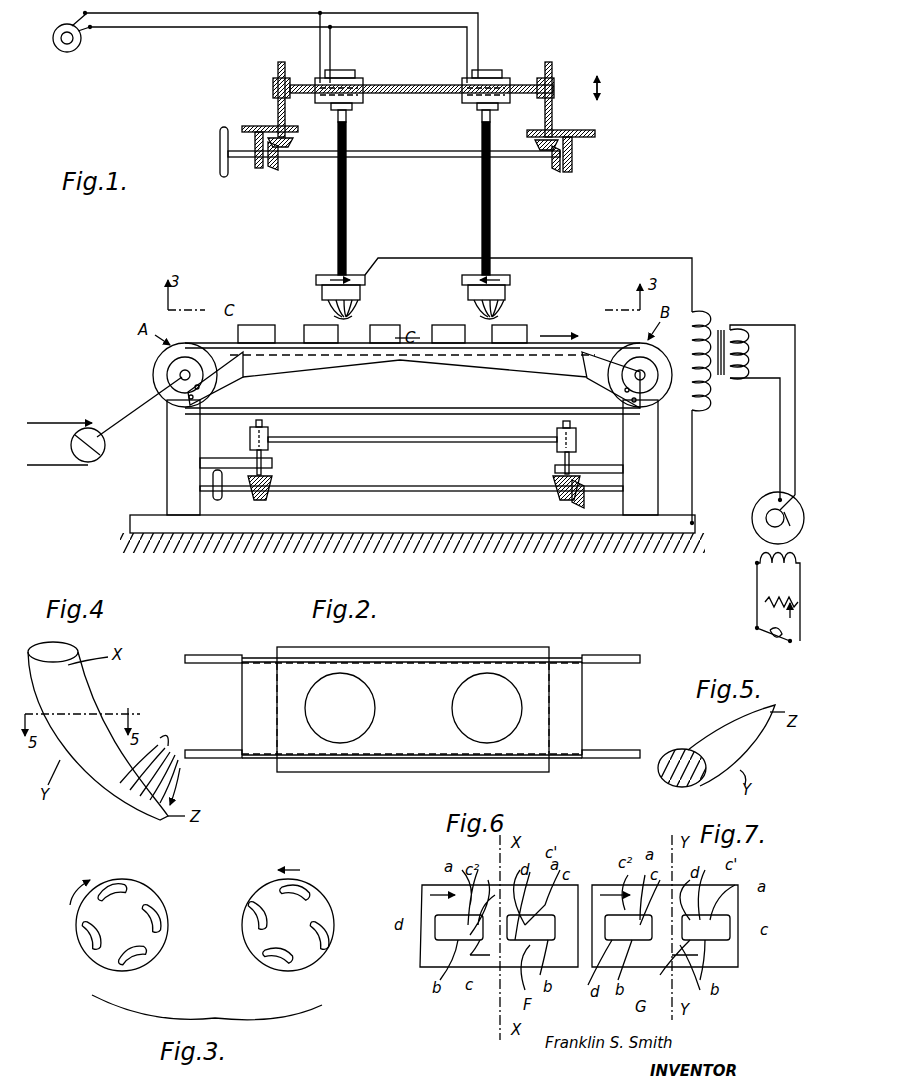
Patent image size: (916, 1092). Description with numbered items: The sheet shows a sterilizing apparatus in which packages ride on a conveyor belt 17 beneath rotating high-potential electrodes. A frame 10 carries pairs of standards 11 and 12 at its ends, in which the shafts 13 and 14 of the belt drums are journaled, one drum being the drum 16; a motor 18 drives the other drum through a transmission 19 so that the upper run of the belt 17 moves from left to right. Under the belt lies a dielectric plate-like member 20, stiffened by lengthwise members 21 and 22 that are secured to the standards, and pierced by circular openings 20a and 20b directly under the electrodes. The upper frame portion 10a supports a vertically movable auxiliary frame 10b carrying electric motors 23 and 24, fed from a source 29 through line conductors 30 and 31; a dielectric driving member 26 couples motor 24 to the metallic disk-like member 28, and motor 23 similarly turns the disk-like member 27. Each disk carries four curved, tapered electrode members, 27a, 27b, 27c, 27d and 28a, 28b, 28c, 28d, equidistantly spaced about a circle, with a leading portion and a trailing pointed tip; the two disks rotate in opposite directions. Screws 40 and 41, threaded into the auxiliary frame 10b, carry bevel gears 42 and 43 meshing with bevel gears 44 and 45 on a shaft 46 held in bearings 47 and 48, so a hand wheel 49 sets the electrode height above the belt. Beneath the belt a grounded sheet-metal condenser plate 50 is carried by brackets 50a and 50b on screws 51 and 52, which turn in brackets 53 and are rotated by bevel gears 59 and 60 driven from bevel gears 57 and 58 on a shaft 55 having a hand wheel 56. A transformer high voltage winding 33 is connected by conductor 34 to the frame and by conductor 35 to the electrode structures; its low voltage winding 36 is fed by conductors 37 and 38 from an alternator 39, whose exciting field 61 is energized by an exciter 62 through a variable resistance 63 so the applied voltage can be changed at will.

In FIG. 1, the frame 10 is at (450, 545).
In FIG. 1, the upper frame portion 10a is at (605, 133).
In FIG. 1, the auxiliary frame member 10b is at (426, 70).
In FIG. 1, the standards 11 is at (167, 472).
In FIG. 1, the standards 12 is at (658, 490).
In FIG. 1, the shaft 13 is at (180, 377).
In FIG. 1, the shaft 14 is at (645, 372).
In FIG. 1, the drum 16 is at (160, 364).
In FIG. 1, the conveyor belt 17 is at (222, 325).
In FIG. 6, the conveyor belt 17 is at (420, 958).
In FIG. 7, the conveyor belt 17 is at (738, 958).
In FIG. 1, the motor 18 is at (95, 462).
In FIG. 1, the transmission 19 is at (135, 420).
In FIG. 1, the plate-like member 20 is at (545, 358).
In FIG. 2, the plate-like member 20 is at (415, 748).
In FIG. 1, the circular opening 20a is at (350, 368).
In FIG. 2, the circular opening 20a is at (375, 700).
In FIG. 1, the circular opening 20b is at (468, 358).
In FIG. 2, the circular opening 20b is at (497, 690).
In FIG. 1, the reinforcing member 21 is at (232, 385).
In FIG. 2, the reinforcing member 21 is at (215, 750).
In FIG. 2, the reinforcing member 22 is at (226, 640).
In FIG. 1, the electric motor 23 is at (348, 70).
In FIG. 1, the electric motor 24 is at (492, 70).
In FIG. 1, the driving member 26 is at (346, 208).
In FIG. 1, the metallic disk-like member 27 is at (362, 290).
In FIG. 3, the metallic disk-like member 27 is at (150, 895).
In FIG. 1, the electrode member 27a is at (336, 312).
In FIG. 3, the electrode member 27a is at (112, 890).
In FIG. 1, the electrode member 27b is at (332, 308).
In FIG. 3, the electrode member 27b is at (88, 938).
In FIG. 3, the electrode member 27c is at (128, 960).
In FIG. 1, the electrode member 27d is at (355, 312).
In FIG. 3, the electrode member 27d is at (160, 925).
In FIG. 1, the metallic disk-like member 28 is at (508, 290).
In FIG. 3, the metallic disk-like member 28 is at (258, 890).
In FIG. 1, the electrode member 28a is at (480, 285).
In FIG. 3, the electrode member 28a is at (300, 888).
In FIG. 4, the electrode member 28a is at (75, 700).
In FIG. 1, the electrode member 28b is at (510, 312).
In FIG. 3, the electrode member 28b is at (322, 938).
In FIG. 1, the electrode member 28c is at (496, 318).
In FIG. 3, the electrode member 28c is at (275, 958).
In FIG. 1, the electrode member 28d is at (475, 305).
In FIG. 3, the electrode member 28d is at (255, 912).
In FIG. 1, the source of energy 29 is at (66, 52).
In FIG. 1, the line conductor 30 is at (178, 14).
In FIG. 1, the line conductor 31 is at (230, 28).
In FIG. 1, the high voltage winding 33 is at (700, 310).
In FIG. 1, the conductor 34 is at (692, 452).
In FIG. 1, the conductor 35 is at (598, 258).
In FIG. 1, the low voltage winding 36 is at (748, 354).
In FIG. 1, the conductor 37 is at (780, 418).
In FIG. 1, the conductor 38 is at (795, 452).
In FIG. 1, the alternator 39 is at (766, 518).
In FIG. 1, the rotatable screw 40 is at (282, 62).
In FIG. 1, the rotatable screw 41 is at (548, 62).
In FIG. 1, the bevel gear 42 is at (293, 140).
In FIG. 1, the bevel gear 43 is at (535, 143).
In FIG. 1, the bevel gear 44 is at (273, 170).
In FIG. 1, the bevel gear 45 is at (556, 172).
In FIG. 1, the shaft 46 is at (425, 157).
In FIG. 1, the bearing 47 is at (259, 168).
In FIG. 1, the bearing 48 is at (568, 172).
In FIG. 1, the hand wheel 49 is at (224, 177).
In FIG. 1, the condenser plate 50 is at (390, 442).
In FIG. 2, the condenser plate 50 is at (412, 647).
In FIG. 1, the bracket 50a is at (268, 432).
In FIG. 1, the bracket 50b is at (557, 432).
In FIG. 1, the screw 51 is at (261, 458).
In FIG. 1, the screw 52 is at (565, 462).
In FIG. 1, the bracket 53 is at (235, 458).
In FIG. 1, the shaft 55 is at (468, 486).
In FIG. 1, the hand wheel 56 is at (217, 500).
In FIG. 1, the bevel gear 57 is at (262, 500).
In FIG. 1, the bevel gear 58 is at (572, 505).
In FIG. 1, the bevel gear 59 is at (272, 480).
In FIG. 1, the bevel gear 60 is at (553, 480).
In FIG. 1, the exciting field 61 is at (757, 563).
In FIG. 1, the exciter 62 is at (770, 642).
In FIG. 1, the variable resistance 63 is at (765, 602).